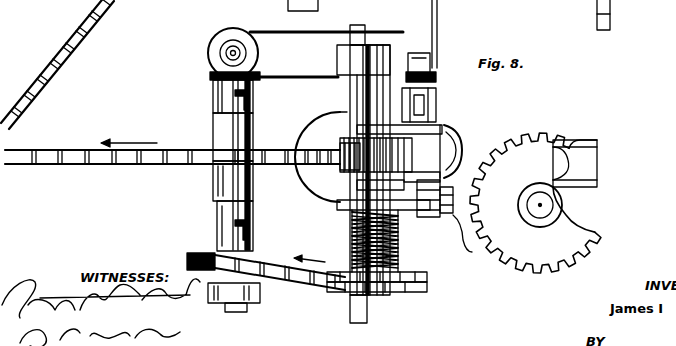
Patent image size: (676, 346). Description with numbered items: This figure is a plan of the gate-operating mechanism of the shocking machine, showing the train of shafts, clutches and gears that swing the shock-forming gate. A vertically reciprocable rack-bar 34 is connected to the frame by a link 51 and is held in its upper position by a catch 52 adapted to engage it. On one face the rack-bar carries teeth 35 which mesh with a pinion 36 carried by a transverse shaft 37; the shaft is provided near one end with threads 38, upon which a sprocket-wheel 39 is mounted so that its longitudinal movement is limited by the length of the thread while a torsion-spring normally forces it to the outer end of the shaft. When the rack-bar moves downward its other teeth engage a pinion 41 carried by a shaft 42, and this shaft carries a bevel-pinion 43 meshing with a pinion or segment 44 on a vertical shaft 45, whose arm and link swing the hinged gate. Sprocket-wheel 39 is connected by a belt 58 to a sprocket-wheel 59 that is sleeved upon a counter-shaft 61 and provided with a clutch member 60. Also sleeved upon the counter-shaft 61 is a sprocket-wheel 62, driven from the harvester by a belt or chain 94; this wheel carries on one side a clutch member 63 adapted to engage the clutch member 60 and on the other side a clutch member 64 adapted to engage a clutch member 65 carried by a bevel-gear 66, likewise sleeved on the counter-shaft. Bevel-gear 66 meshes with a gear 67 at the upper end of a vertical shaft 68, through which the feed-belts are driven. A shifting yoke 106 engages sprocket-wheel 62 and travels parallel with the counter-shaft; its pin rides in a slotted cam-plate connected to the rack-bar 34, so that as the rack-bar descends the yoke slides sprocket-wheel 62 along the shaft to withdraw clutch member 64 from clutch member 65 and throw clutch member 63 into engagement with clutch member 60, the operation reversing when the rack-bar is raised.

The belt or chain 94 is at (110, 13).
The gear 67 is at (228, 28).
The vertical shaft 68 is at (326, 38).
The bevel-gear 66 is at (210, 76).
The clutch member 65 is at (213, 100).
The clutch member 64 is at (213, 138).
The clutch member 63 is at (213, 188).
The clutch member 60 is at (217, 228).
The sprocket-wheel 59 is at (200, 253).
The belt 58 is at (307, 291).
The counter-shaft 61 is at (238, 309).
The sprocket-wheel 62 is at (278, 151).
The shifting yoke 106 is at (320, 128).
The transverse shaft 37 is at (372, 80).
The catch 52 is at (425, 63).
The teeth 35 is at (440, 120).
The rack-bar 34 is at (440, 150).
The pinion or segment 44 is at (535, 203).
The vertical shaft 45 is at (542, 205).
The pinion 41 is at (416, 224).
The shaft 42 is at (438, 210).
The pinion 36 is at (432, 232).
The bevel-pinion 43 is at (473, 247).
The sprocket-wheel 39 is at (420, 284).
The threads 38 is at (398, 291).
The link 51 is at (611, 14).